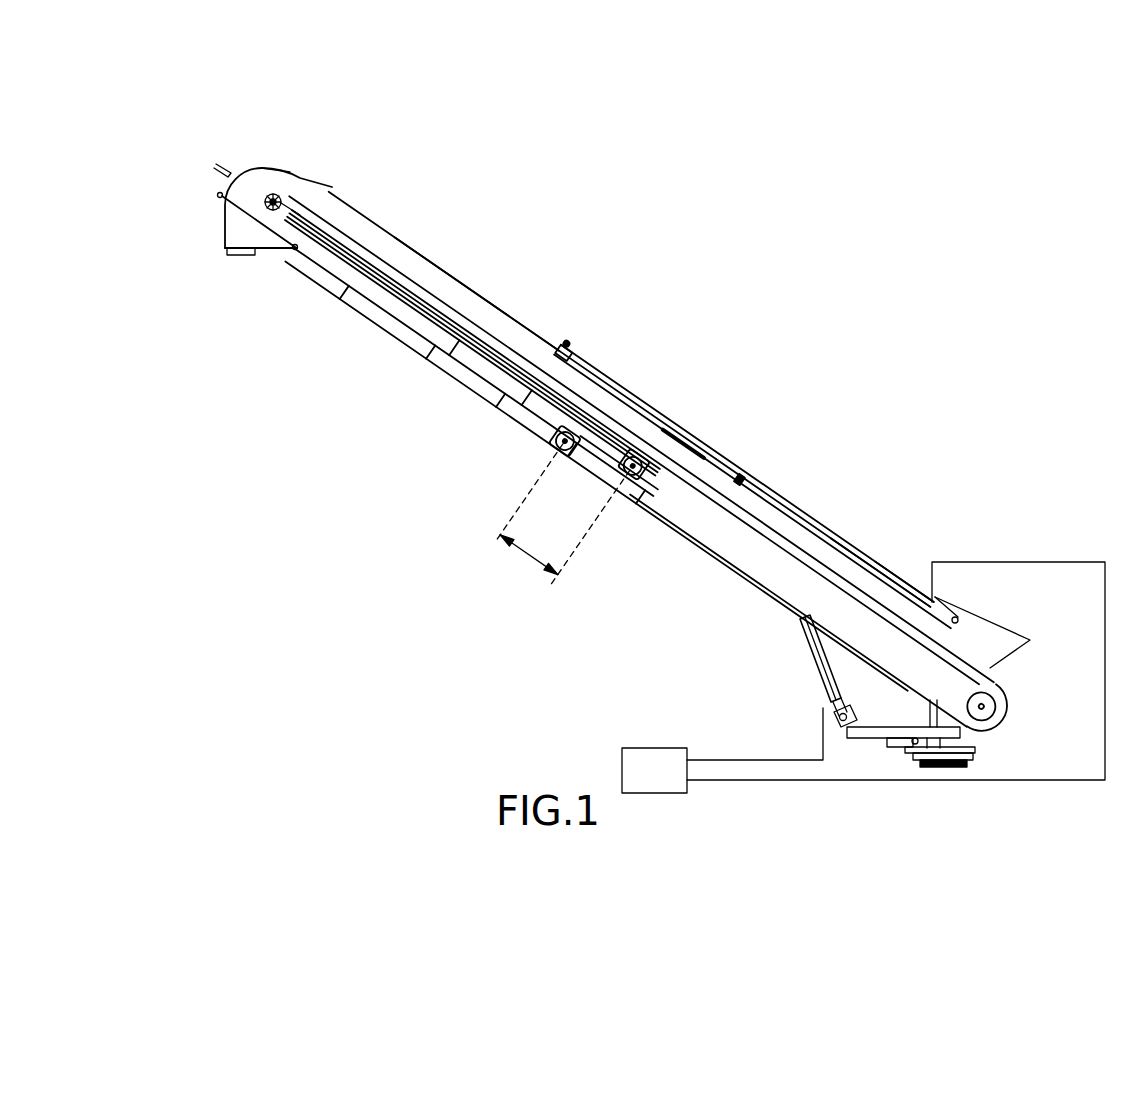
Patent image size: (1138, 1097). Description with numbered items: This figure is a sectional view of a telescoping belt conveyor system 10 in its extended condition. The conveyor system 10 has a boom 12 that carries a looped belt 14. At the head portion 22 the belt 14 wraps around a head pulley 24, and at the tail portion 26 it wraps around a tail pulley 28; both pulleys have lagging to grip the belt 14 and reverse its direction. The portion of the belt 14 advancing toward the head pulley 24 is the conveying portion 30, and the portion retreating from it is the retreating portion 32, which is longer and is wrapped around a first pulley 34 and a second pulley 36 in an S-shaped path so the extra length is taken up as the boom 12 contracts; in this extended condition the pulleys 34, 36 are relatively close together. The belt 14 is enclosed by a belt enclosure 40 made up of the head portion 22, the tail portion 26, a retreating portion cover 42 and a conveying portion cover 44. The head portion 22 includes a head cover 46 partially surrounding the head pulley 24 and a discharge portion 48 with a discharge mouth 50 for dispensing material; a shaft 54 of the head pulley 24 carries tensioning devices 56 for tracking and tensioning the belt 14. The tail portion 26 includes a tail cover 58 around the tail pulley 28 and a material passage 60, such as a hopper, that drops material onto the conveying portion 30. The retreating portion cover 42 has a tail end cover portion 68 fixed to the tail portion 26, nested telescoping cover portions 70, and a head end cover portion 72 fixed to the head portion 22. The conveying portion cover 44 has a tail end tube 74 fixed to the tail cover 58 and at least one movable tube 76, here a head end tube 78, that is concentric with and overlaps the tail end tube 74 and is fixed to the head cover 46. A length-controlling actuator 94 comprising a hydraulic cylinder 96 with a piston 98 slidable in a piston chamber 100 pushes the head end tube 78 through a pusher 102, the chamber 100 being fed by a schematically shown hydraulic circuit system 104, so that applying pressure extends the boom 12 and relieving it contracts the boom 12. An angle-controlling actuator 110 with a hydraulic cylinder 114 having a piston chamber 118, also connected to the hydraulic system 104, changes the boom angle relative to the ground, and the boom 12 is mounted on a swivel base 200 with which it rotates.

The telescoping belt conveyor system 10 is at (612, 264).
The boom 12 is at (434, 258).
The looped belt 14 is at (333, 232).
The head portion 22 is at (256, 170).
The head pulley 24 is at (276, 199).
The tail portion 26 is at (1010, 680).
The tail pulley 28 is at (985, 712).
The conveying portion 30 is at (493, 337).
The retreating portion 32 is at (636, 505).
The first pulley 34 is at (625, 475).
The second pulley 36 is at (556, 445).
The belt enclosure 40 is at (392, 323).
The retreating portion cover 42 is at (473, 383).
The conveying portion cover 44 is at (675, 440).
The head cover 46 is at (276, 180).
The discharge portion 48 is at (242, 227).
The discharge mouth 50 is at (233, 256).
The shaft 54 is at (282, 203).
The tensioning devices 56 is at (222, 165).
The tail cover 58 is at (1015, 660).
The material passage 60 is at (1010, 638).
The tail end cover portion 68 is at (858, 650).
The telescoping cover portions 70 is at (423, 350).
The head end cover portion 72 is at (330, 263).
The tail end tube 74 is at (710, 480).
The movable tube 76 is at (455, 296).
The head end tube 78 is at (372, 238).
The length-controlling actuator 94 is at (785, 478).
The hydraulic cylinder 96 is at (840, 540).
The piston 98 is at (610, 380).
The piston chamber 100 is at (878, 563).
The pusher 102 is at (547, 333).
The hydraulic circuit system 104 is at (722, 750).
The angle-controlling actuator 110 is at (812, 648).
The hydraulic cylinder 114 is at (805, 628).
The piston chamber 118 is at (838, 692).
The swivel base 200 is at (918, 757).